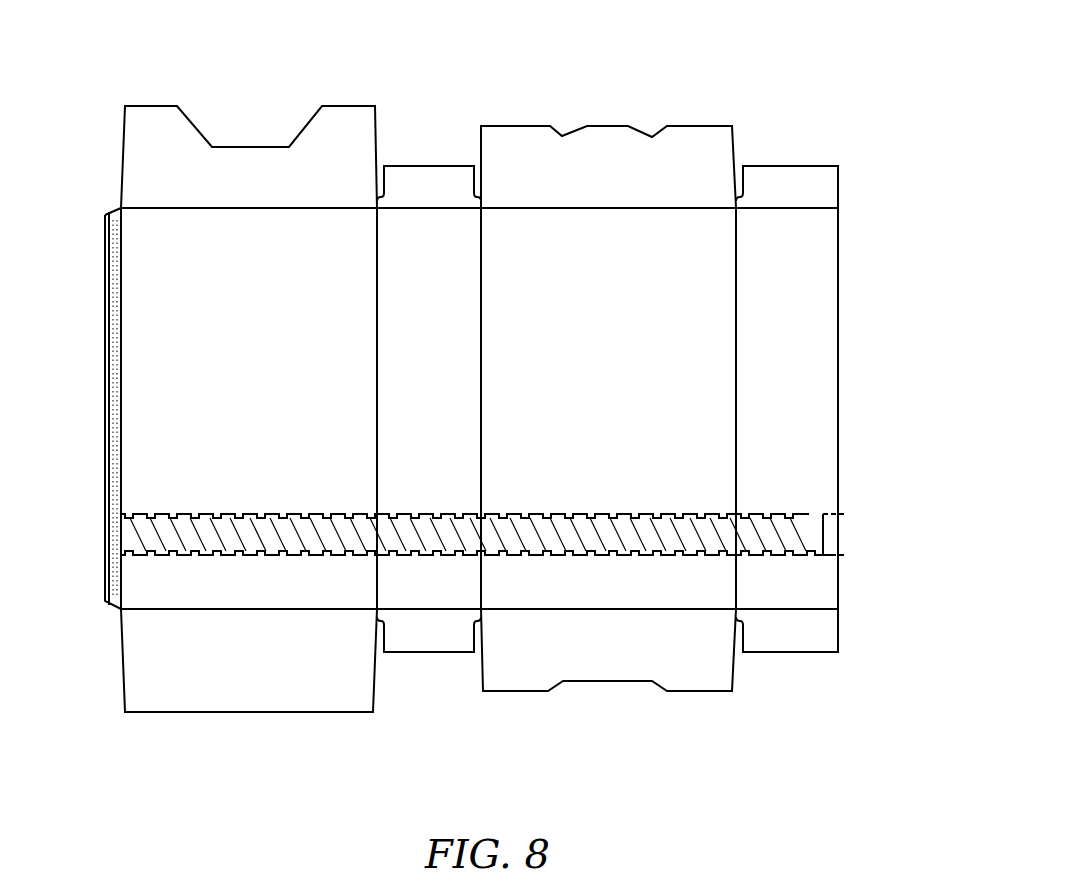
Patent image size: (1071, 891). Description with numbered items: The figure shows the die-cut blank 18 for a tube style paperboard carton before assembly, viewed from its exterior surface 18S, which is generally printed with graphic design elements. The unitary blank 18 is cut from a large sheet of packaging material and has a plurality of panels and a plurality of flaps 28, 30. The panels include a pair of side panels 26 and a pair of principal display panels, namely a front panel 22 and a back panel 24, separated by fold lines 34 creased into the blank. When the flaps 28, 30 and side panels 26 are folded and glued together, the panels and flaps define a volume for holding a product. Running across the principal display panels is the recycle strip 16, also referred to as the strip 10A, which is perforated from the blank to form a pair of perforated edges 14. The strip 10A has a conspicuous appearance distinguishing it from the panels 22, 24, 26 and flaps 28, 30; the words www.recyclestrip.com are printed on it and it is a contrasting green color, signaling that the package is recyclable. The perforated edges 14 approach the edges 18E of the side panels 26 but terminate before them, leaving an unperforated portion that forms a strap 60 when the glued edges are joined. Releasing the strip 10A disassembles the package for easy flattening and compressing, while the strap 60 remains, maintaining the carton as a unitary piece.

The blank 18 is at (472, 48).
The exterior surface 18S is at (628, 355).
The edges 18E is at (108, 578).
The strip 10A is at (807, 513).
The perforated edges 14 is at (648, 517).
The recycle strip 16 is at (194, 520).
The front panel 22 is at (717, 220).
The back panel 24 is at (353, 220).
The side panels 26 is at (422, 180).
The flap 28 is at (676, 144).
The flap 30 is at (705, 680).
The fold lines 34 is at (377, 330).
The strap 60 is at (105, 555).